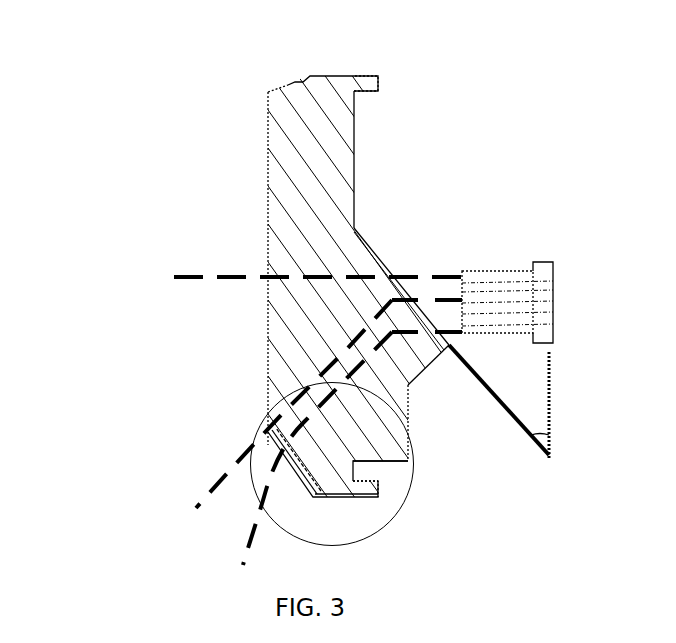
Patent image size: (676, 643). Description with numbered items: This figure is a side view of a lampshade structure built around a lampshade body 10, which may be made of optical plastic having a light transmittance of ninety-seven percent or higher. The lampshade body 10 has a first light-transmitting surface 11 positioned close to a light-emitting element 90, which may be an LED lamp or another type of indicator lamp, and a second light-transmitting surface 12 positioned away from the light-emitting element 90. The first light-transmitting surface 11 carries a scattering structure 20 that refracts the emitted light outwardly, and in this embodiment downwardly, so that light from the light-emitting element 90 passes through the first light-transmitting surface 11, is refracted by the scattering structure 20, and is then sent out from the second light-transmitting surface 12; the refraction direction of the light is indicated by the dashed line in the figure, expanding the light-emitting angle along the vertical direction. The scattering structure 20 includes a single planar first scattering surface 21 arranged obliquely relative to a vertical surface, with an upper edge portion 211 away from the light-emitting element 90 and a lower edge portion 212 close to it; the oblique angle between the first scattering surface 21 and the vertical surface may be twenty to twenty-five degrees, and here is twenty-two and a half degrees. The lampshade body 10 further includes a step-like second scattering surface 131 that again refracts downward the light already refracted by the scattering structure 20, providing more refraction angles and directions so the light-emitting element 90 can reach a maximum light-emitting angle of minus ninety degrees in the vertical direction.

The lampshade body 10 is at (345, 168).
The first light-transmitting surface 11 is at (354, 170).
The second light-transmitting surface 12 is at (268, 235).
The second scattering surface 131 is at (292, 85).
The scattering structure 20 is at (450, 348).
The first scattering surface 21 is at (378, 262).
The upper edge portion 211 is at (354, 228).
The lower edge portion 212 is at (452, 343).
The light-emitting element 90 is at (497, 285).